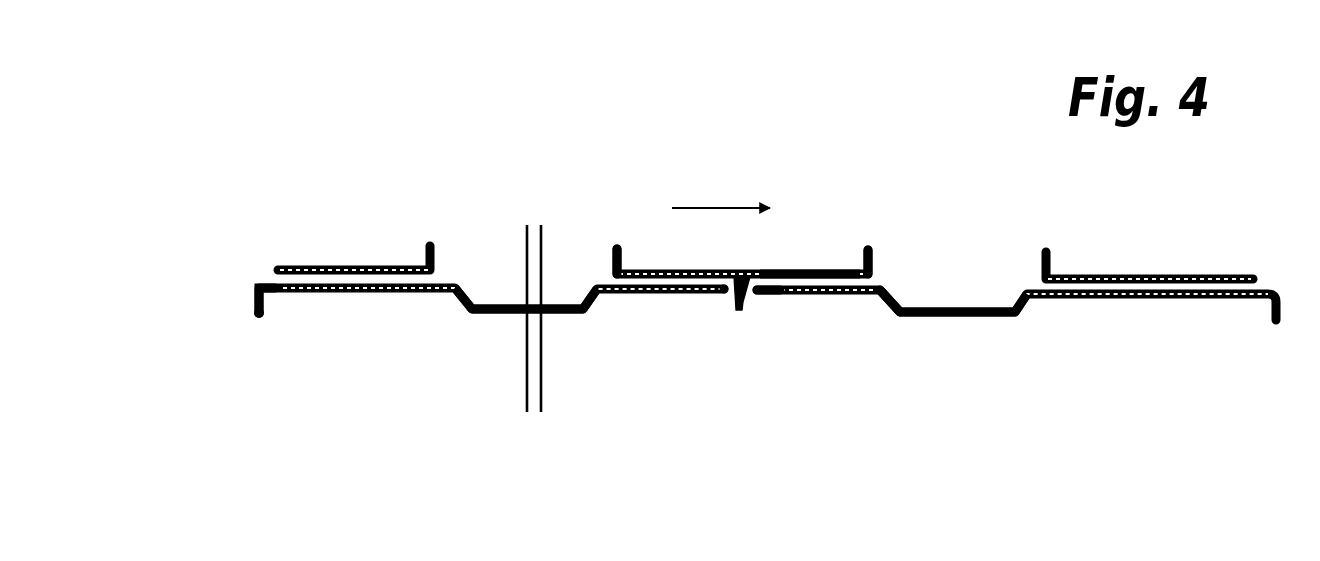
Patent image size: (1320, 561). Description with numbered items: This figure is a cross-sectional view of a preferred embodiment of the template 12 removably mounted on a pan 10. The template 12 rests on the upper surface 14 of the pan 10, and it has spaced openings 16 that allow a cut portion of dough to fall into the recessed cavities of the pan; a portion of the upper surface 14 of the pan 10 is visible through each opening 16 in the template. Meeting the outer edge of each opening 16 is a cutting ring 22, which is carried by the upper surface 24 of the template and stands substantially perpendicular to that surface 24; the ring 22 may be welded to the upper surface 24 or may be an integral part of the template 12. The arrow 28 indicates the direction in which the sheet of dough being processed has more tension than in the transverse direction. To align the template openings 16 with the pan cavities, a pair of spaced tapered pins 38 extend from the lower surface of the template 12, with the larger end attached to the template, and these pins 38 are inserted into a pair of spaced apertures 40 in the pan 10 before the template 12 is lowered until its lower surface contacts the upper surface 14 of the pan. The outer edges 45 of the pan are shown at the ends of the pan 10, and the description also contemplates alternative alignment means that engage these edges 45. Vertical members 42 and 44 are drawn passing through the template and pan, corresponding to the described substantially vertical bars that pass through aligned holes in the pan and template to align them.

The pan 10 is at (1113, 302).
The template 12 is at (1125, 275).
The upper surface of the pan 14 is at (617, 270).
The opening 16 is at (510, 277).
The cutting ring 22 is at (868, 258).
The upper surface of the template 24 is at (815, 271).
The arrow 28 is at (721, 183).
The pin 38 is at (747, 298).
The aperture 40 is at (767, 293).
The first guide member 42 is at (522, 380).
The second guide member 44 is at (545, 358).
The outer edge of the pan 45 is at (257, 285).